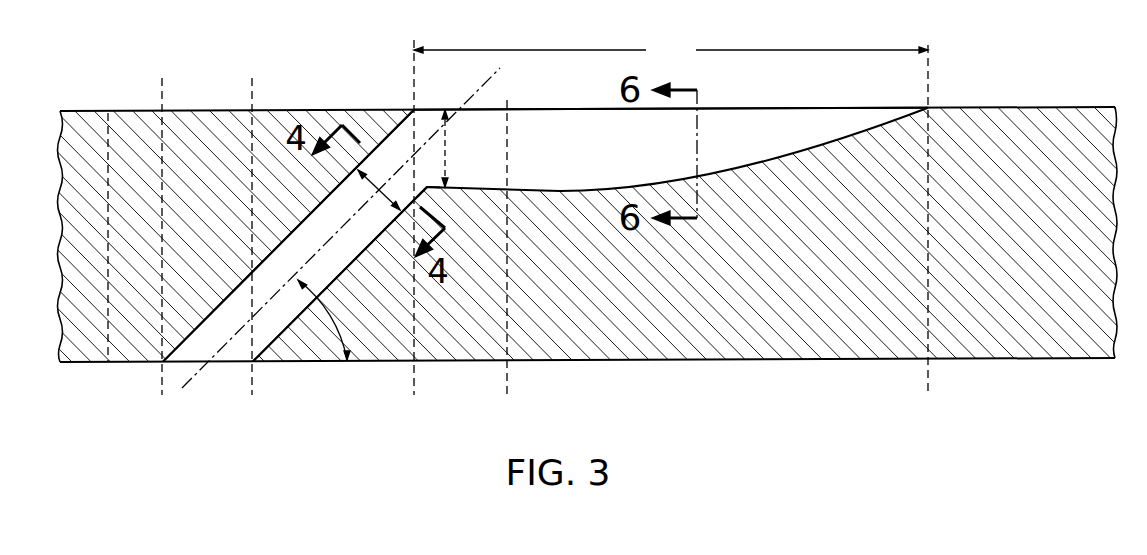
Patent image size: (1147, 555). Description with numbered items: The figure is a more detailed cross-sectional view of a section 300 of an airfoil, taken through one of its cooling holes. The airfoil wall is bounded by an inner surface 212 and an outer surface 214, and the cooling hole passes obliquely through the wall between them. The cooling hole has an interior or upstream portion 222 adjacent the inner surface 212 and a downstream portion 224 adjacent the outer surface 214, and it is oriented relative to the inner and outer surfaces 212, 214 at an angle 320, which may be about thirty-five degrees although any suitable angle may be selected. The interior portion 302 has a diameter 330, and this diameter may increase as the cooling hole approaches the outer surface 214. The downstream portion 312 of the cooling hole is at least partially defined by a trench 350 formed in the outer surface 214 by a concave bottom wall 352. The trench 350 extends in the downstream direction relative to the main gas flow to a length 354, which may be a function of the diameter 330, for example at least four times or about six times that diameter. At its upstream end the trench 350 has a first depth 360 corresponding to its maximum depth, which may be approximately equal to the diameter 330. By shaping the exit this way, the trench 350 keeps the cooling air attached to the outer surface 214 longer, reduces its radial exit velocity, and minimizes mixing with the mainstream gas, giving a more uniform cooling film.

The section of the airfoil 300 is at (291, 77).
The inner surface 212 is at (562, 362).
The outer surface 214 is at (212, 109).
The upstream portion 222 is at (243, 281).
The downstream portion 224 is at (386, 138).
The interior portion 302 is at (270, 248).
The downstream portion 312 is at (425, 185).
The angle 320 is at (338, 320).
The diameter 330 is at (376, 189).
The trench 350 is at (557, 123).
The concave bottom wall 352 is at (553, 192).
The length 354 is at (671, 50).
The first depth 360 is at (446, 150).